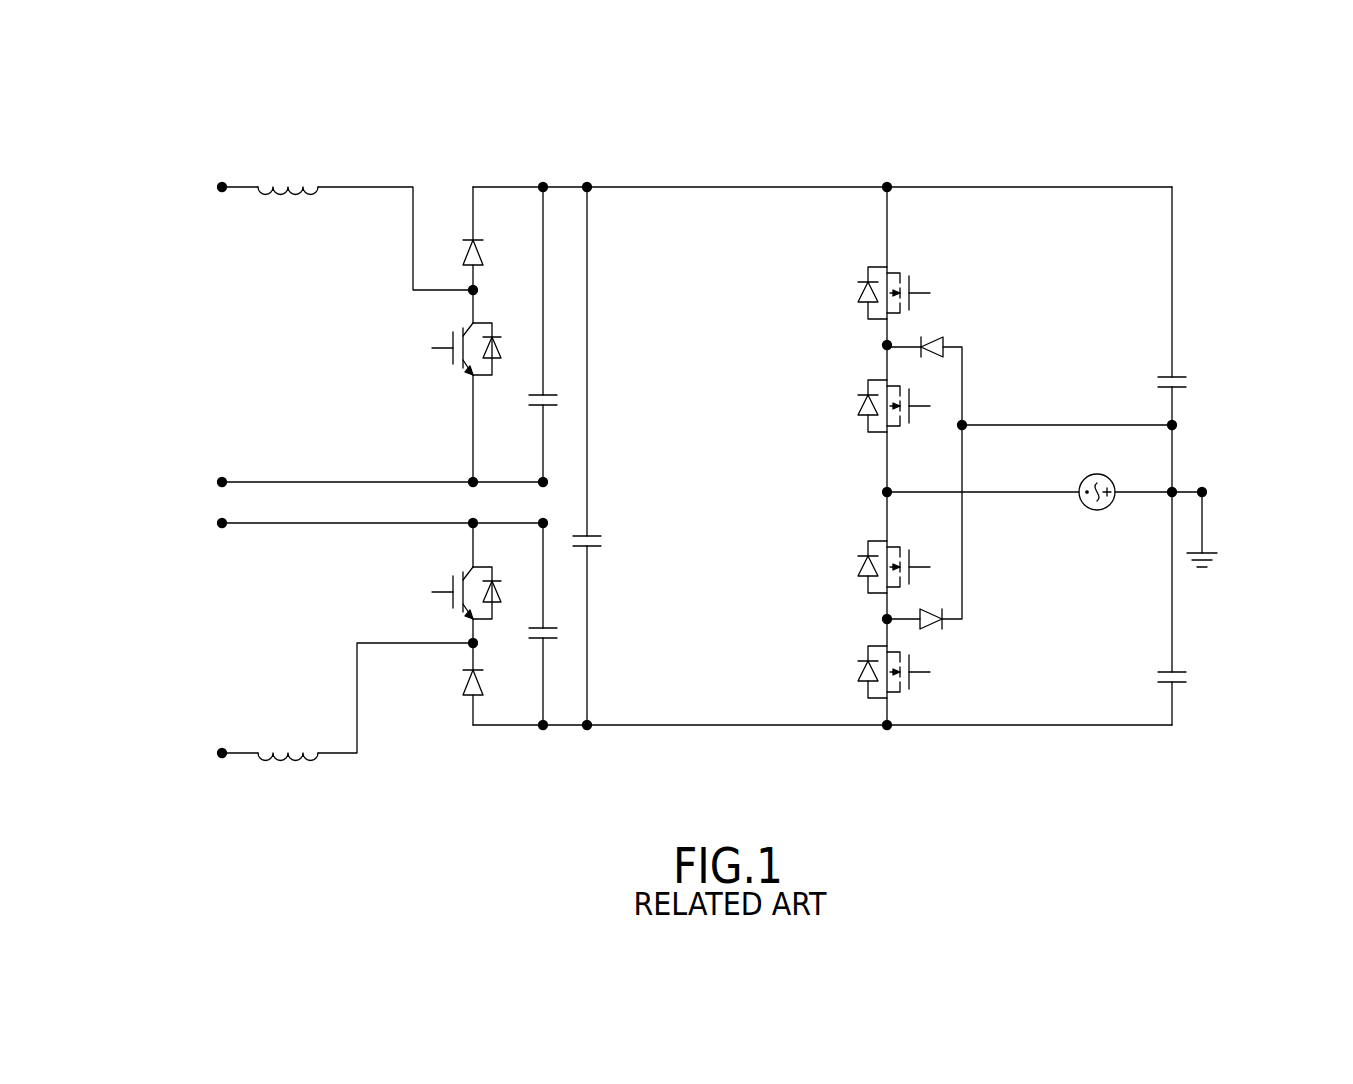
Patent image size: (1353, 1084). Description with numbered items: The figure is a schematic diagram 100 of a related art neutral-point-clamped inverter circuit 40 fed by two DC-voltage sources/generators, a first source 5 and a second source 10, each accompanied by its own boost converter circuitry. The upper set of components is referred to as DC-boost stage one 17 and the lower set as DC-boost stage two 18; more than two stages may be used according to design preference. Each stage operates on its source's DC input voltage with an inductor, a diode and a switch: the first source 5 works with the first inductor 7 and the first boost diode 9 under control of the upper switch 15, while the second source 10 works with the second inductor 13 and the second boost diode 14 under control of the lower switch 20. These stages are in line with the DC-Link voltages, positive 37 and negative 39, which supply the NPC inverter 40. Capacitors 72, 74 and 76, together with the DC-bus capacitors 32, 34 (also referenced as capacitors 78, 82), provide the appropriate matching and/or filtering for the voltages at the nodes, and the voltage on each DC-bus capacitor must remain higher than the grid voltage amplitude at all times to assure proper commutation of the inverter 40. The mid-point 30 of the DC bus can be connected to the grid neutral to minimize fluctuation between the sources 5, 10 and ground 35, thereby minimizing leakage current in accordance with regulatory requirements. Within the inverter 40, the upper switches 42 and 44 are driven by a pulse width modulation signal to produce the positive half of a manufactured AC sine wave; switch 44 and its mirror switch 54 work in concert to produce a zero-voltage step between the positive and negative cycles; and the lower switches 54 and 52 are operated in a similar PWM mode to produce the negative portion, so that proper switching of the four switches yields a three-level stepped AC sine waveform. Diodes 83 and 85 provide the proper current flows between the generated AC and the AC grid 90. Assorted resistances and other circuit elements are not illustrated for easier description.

The DC-voltage source/generator V_dc1 5 is at (165, 353).
The inductor L2 7 is at (287, 185).
The diode D3 9 is at (462, 252).
The DC-voltage source/generator V_dc2 10 is at (168, 648).
The inductor L3 13 is at (305, 775).
The diode D2 14 is at (468, 705).
The upper boost converter switch 15 is at (397, 353).
The DC-boost stage 1 17 is at (436, 286).
The DC-boost stage 2 18 is at (412, 703).
The lower boost converter switch 20 is at (415, 570).
The mid-point of the DC-Bus 30 is at (1086, 504).
The DC-Bus capacitor C8 32 is at (1180, 306).
The DC-Bus capacitor C9 34 is at (1155, 608).
The ground 35 is at (1212, 495).
The positive DC-Link voltage 37 is at (672, 192).
The negative DC-Link voltage 39 is at (679, 730).
The NPC inverter circuit 40 is at (1009, 411).
The switch FETD19 42 is at (860, 270).
The switch FETD17 44 is at (810, 392).
The switch FETD20 52 is at (858, 692).
The switch FETD18 54 is at (858, 585).
The capacitor C5 72 is at (550, 405).
The capacitor C6 74 is at (550, 638).
The capacitor C7 76 is at (609, 526).
The capacitor C8 78 is at (1190, 378).
The capacitor C9 82 is at (1193, 680).
The diode D6 83 is at (945, 345).
The diode D7 85 is at (965, 618).
The AC Grid 90 is at (1097, 512).
The schematic diagram 100 is at (1068, 147).